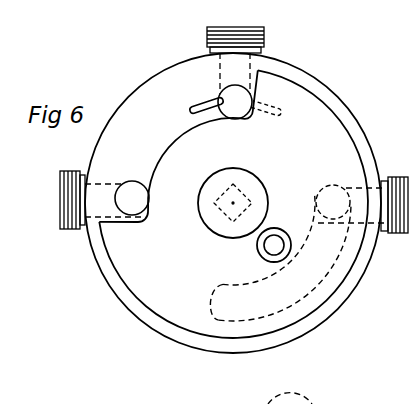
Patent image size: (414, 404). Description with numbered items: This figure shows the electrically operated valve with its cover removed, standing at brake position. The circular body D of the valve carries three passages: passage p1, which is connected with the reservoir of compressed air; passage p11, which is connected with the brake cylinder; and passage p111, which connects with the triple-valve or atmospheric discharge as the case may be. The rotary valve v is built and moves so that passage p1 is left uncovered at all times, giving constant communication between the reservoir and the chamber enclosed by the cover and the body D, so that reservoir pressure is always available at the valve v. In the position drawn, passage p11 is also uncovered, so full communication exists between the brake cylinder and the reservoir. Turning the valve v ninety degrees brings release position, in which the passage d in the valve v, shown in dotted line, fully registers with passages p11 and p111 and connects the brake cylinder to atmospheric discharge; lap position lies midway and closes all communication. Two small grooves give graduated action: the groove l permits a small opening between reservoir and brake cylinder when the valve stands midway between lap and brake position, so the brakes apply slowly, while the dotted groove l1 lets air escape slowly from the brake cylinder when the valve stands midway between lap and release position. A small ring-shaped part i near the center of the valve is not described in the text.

The body of the valve D is at (152, 79).
The valve v is at (172, 147).
The groove l is at (215, 99).
The groove l1 is at (264, 103).
The passage p1 is at (117, 199).
The passage p11 is at (235, 86).
The passage p111 is at (350, 204).
The pivot / pin i is at (277, 237).
The passage in the valve d is at (328, 270).